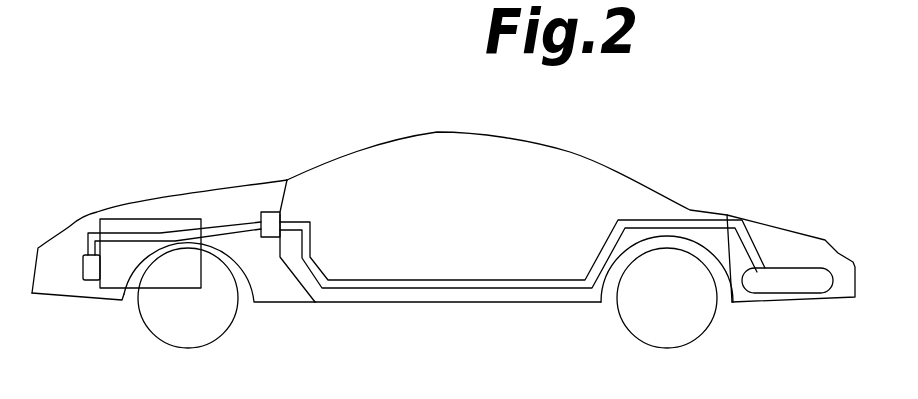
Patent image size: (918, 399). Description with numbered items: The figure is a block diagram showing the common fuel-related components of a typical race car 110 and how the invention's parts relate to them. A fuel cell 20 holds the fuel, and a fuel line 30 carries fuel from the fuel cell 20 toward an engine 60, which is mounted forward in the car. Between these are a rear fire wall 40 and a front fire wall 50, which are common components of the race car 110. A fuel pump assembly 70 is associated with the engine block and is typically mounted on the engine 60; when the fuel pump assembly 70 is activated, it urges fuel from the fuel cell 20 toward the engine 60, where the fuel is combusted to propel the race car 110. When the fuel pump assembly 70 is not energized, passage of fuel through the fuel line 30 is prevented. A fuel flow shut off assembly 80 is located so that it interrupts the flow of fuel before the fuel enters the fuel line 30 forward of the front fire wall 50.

The race car 110 is at (605, 150).
The fuel cell 20 is at (793, 266).
The fuel line 30 is at (644, 215).
The rear fire wall 40 is at (726, 251).
The front fire wall 50 is at (284, 194).
The engine 60 is at (134, 217).
The fuel pump assembly 70 is at (89, 226).
The fuel flow shut off assembly 80 is at (270, 212).